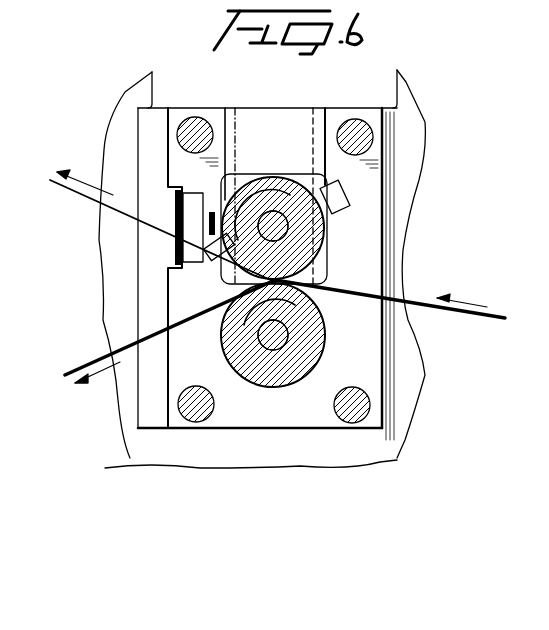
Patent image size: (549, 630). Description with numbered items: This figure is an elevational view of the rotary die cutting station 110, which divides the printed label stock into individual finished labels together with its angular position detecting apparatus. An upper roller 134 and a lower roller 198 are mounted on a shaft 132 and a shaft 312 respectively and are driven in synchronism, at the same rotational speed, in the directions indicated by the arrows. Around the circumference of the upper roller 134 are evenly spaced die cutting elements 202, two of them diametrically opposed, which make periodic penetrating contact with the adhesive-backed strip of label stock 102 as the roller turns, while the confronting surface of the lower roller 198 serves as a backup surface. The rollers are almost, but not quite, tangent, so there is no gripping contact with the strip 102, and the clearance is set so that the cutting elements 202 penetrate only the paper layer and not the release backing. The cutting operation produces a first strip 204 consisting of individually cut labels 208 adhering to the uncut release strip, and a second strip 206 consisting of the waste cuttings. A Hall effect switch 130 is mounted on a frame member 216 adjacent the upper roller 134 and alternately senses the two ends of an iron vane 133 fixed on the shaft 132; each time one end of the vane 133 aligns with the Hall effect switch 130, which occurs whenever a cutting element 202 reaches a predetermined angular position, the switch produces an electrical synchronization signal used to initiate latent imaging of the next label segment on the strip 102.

The rotary die cutting station 110 is at (110, 100).
The frame member 216 is at (148, 180).
The Hall effect switch 130 is at (213, 238).
The shaft 132 is at (285, 205).
The die cutting elements 202 is at (222, 210).
The iron vane 133 is at (337, 200).
The upper roller 134 is at (322, 238).
The second strip 206 is at (72, 192).
The individually cut labels 208 is at (105, 345).
The first strip 204 is at (80, 372).
The strip of label stock 102 is at (458, 316).
The lower roller 198 is at (268, 387).
The shaft 312 is at (283, 345).